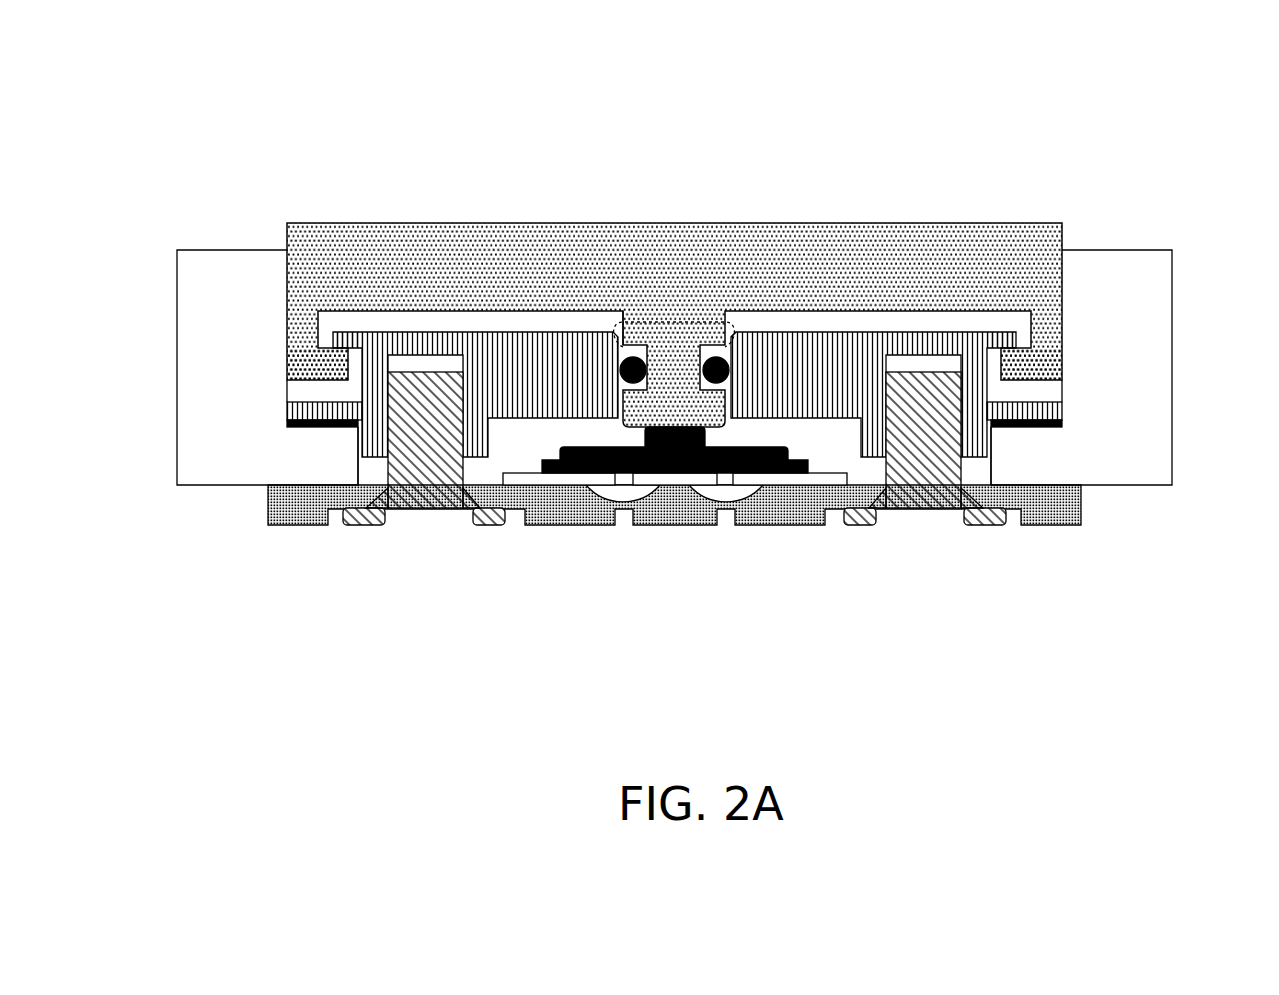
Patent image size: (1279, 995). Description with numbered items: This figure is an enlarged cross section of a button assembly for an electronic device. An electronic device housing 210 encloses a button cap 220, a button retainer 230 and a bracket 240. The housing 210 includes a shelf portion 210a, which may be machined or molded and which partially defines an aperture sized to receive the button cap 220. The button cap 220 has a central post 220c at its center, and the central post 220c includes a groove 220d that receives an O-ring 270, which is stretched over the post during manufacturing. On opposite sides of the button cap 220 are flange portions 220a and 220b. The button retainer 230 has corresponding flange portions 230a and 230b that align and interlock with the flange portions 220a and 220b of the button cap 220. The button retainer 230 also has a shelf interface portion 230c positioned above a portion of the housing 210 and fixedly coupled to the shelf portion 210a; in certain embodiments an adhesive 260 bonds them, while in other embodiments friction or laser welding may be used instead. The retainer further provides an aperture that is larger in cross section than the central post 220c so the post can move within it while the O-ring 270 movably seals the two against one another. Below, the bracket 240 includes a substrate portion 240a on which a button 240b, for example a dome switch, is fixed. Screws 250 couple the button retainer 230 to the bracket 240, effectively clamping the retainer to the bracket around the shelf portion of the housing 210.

The electronic device housing 210 is at (177, 250).
The shelf portion 210a is at (300, 456).
The button cap 220 is at (287, 222).
The flange portion 220a is at (320, 355).
The flange portion 220b is at (1029, 355).
The central post 220c is at (674, 330).
The groove 220d is at (630, 326).
The button retainer 230 is at (503, 332).
The flange portion 230a is at (345, 332).
The flange portion 230b is at (1000, 336).
The shelf interface portion 230c is at (287, 402).
The bracket 240 is at (268, 525).
The substrate portion 240a is at (784, 512).
The button 240b is at (808, 487).
The screws 250 is at (412, 508).
The adhesive 260 is at (276, 424).
The O-ring 270 is at (657, 328).